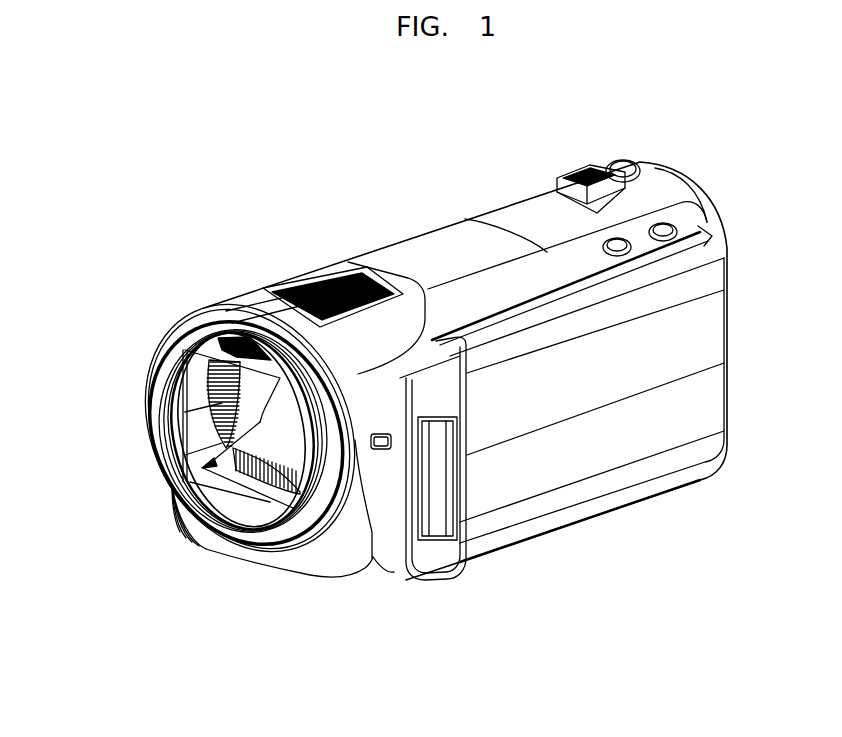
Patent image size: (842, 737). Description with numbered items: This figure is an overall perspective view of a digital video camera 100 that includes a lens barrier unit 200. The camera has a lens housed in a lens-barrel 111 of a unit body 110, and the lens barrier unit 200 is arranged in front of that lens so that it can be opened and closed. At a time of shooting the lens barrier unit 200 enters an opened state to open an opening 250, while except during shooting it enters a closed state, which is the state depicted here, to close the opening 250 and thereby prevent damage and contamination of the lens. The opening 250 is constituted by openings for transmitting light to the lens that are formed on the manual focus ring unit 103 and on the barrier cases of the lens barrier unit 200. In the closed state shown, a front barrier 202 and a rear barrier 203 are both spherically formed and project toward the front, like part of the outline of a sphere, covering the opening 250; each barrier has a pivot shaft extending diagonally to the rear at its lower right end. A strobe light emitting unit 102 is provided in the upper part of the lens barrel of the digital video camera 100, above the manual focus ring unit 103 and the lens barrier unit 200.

The digital video camera 100 is at (430, 217).
The unit body 110 is at (505, 213).
The lens-barrel 111 is at (355, 374).
The strobe light emitting unit 102 is at (157, 361).
The manual focus ring unit 103 is at (222, 307).
The lens barrier unit 200 is at (207, 492).
The front barrier 202 is at (206, 549).
The rear barrier 203 is at (203, 408).
The opening 250 is at (236, 466).